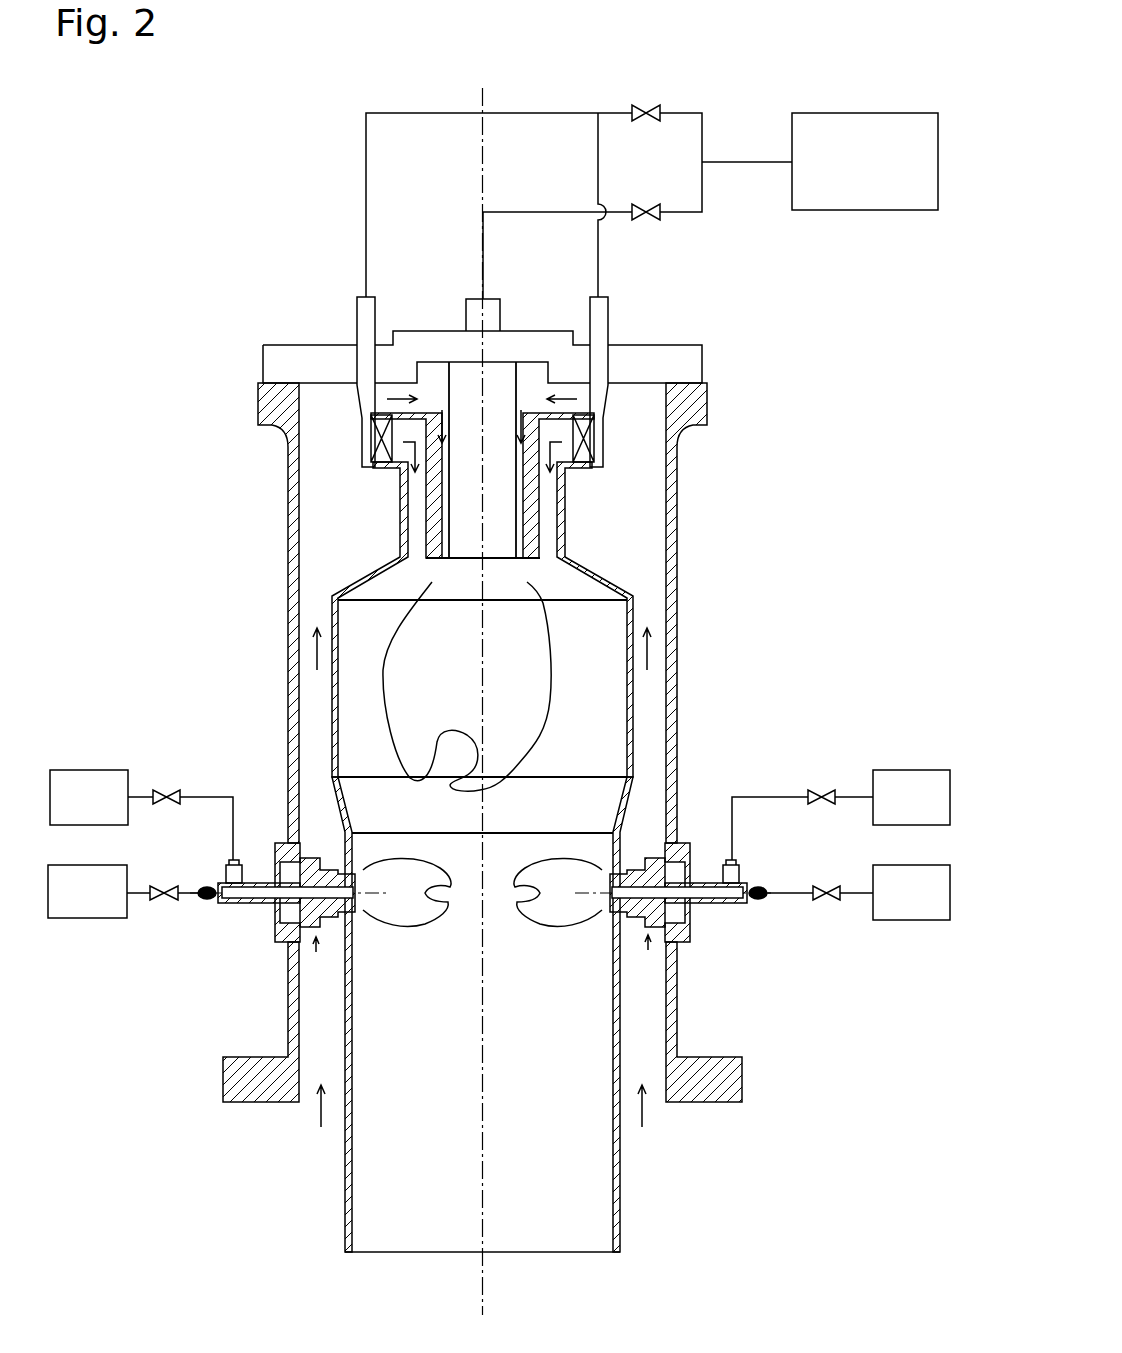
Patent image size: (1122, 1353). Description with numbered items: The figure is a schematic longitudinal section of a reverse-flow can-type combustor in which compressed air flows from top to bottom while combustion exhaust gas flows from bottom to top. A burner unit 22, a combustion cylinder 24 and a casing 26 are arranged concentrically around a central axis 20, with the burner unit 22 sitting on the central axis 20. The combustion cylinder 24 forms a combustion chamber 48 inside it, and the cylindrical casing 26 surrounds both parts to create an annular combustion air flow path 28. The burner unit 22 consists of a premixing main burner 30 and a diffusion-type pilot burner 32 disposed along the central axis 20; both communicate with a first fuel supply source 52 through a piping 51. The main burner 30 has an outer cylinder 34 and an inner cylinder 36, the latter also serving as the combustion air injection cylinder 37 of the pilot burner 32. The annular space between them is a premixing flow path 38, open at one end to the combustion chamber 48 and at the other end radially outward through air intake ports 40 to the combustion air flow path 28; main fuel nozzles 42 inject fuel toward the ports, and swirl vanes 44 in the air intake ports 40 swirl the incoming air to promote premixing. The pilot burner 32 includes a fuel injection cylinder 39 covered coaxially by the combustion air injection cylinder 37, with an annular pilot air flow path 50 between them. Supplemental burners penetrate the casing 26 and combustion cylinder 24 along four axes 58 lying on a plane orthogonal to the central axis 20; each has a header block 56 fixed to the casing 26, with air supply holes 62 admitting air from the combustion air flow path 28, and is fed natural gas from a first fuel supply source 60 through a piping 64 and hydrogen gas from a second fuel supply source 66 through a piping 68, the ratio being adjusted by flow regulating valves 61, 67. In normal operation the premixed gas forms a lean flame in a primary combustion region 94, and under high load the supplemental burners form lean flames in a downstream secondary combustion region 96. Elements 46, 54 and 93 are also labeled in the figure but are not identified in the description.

The central axis 20 is at (482, 1273).
The burner unit 22 is at (338, 281).
The combustion cylinder 24 is at (617, 1217).
The casing 26 is at (677, 632).
The combustion air flow path 28 is at (648, 735).
The main burner 30 is at (400, 546).
The pilot burner 32 is at (462, 533).
The outer cylinder 34 is at (563, 542).
The inner cylinder 36 is at (505, 530).
The combustion air injection cylinder 37 is at (540, 502).
The premixing flow path 38 is at (548, 483).
The fuel injection cylinder 39 is at (443, 483).
The air intake ports 40 is at (373, 443).
The main fuel nozzles 42 is at (598, 322).
The swirl vanes 44 is at (593, 443).
The gas outlet opening 46 is at (551, 556).
The combustion chamber 48 is at (602, 760).
The pilot air flow path 50 is at (443, 502).
The piping 51 is at (365, 182).
The first fuel supply source 52 is at (893, 175).
The lower chamber wall 54 is at (618, 843).
The header block 56 is at (687, 925).
The axes 58 is at (380, 895).
The first fuel supply source 60 is at (113, 811).
The flow regulating valve 61 is at (177, 793).
The air supply holes 62 is at (312, 925).
The piping 64 is at (209, 795).
The second fuel supply source 66 is at (110, 906).
The flow regulating valve 67 is at (170, 897).
The piping 68 is at (187, 897).
The annular passage 93 is at (432, 563).
The primary combustion region 94 is at (505, 699).
The secondary combustion region 96 is at (505, 934).